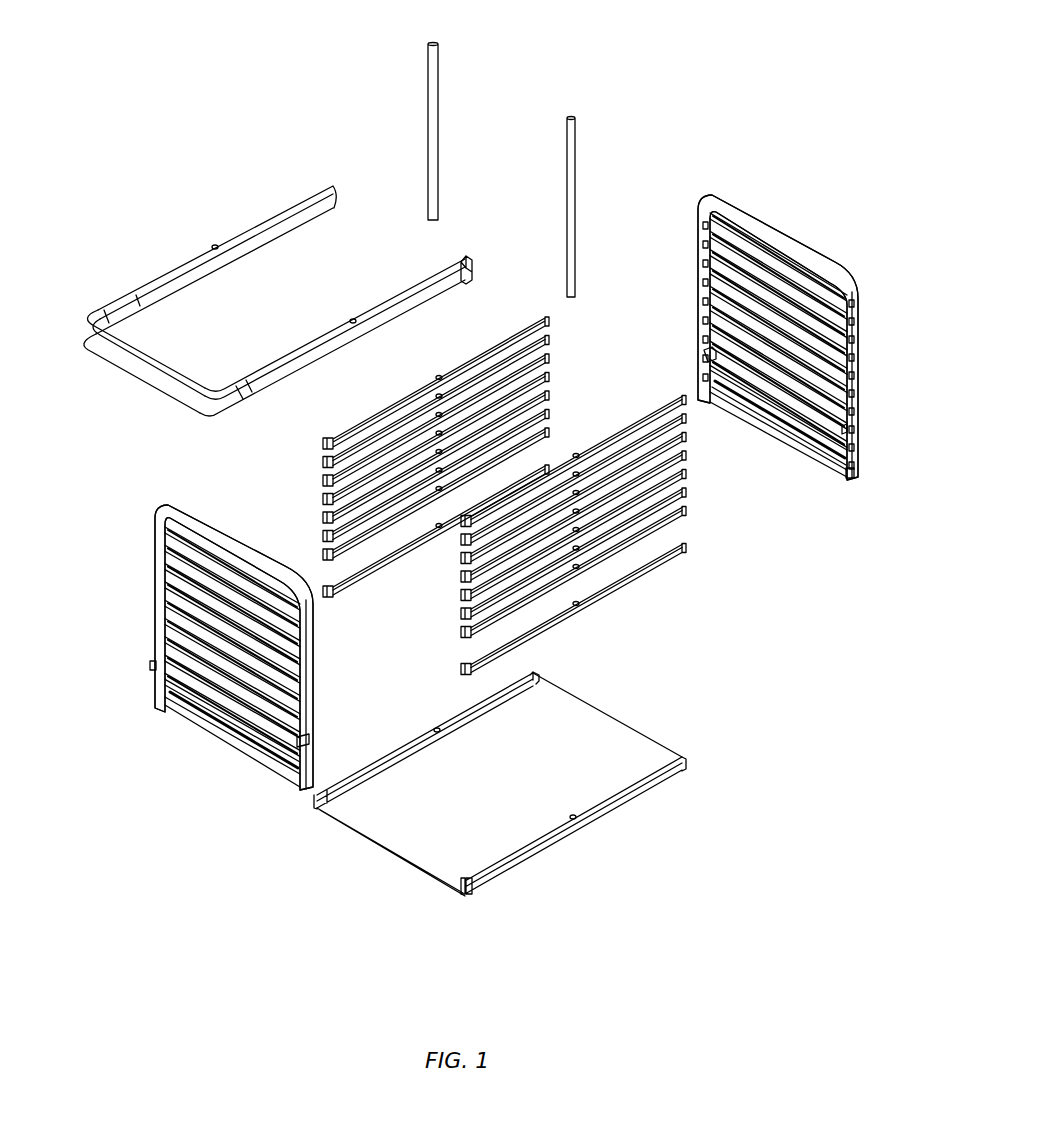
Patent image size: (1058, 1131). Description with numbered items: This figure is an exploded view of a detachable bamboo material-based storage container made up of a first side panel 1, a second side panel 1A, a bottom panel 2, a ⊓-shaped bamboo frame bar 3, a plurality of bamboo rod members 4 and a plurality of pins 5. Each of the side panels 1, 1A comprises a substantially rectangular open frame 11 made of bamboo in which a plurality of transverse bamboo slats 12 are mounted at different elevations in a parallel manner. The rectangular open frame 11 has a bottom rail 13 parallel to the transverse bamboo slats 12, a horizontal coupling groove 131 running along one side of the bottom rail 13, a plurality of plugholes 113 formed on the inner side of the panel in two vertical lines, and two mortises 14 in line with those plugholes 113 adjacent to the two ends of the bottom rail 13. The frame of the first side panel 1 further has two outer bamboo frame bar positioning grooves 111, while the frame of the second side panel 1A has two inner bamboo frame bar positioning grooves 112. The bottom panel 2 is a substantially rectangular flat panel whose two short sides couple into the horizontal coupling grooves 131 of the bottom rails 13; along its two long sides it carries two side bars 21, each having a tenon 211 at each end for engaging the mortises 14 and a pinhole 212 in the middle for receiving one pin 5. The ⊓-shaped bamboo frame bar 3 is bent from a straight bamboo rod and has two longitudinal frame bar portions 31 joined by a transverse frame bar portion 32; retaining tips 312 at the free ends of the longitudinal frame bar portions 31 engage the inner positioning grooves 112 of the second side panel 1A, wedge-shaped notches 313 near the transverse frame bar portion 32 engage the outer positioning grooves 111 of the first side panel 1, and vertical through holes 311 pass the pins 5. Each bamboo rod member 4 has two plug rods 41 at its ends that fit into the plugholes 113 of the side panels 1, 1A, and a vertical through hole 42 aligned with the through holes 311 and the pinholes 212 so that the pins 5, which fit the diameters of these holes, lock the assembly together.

The first side panel 1 is at (150, 613).
The second side panel 1A is at (830, 237).
The rectangular open frame 11 is at (160, 542).
The outer bamboo frame bar positioning groove 111 is at (153, 665).
The inner bamboo frame bar positioning groove 112 is at (704, 353).
The plughole 113 is at (841, 340).
The transverse bamboo slat 12 is at (200, 557).
The bottom rail 13 is at (202, 727).
The horizontal coupling groove 131 is at (797, 446).
The mortise 14 is at (840, 478).
The bottom panel 2 is at (555, 784).
The side bar 21 is at (654, 789).
The tenon 211 is at (684, 760).
The pinhole 212 is at (578, 818).
The ⊓-shaped bamboo frame bar 3 is at (295, 294).
The longitudinal frame bar portion 31 is at (252, 227).
The transverse frame bar portion 32 is at (150, 372).
The vertical through hole 311 is at (352, 322).
The retaining tip 312 is at (463, 258).
The wedge-shaped notch 313 is at (111, 302).
The bamboo rod member 4 is at (504, 459).
The plug rod 41 is at (543, 313).
The vertical through hole 42 is at (436, 375).
The pin 5 is at (434, 130).